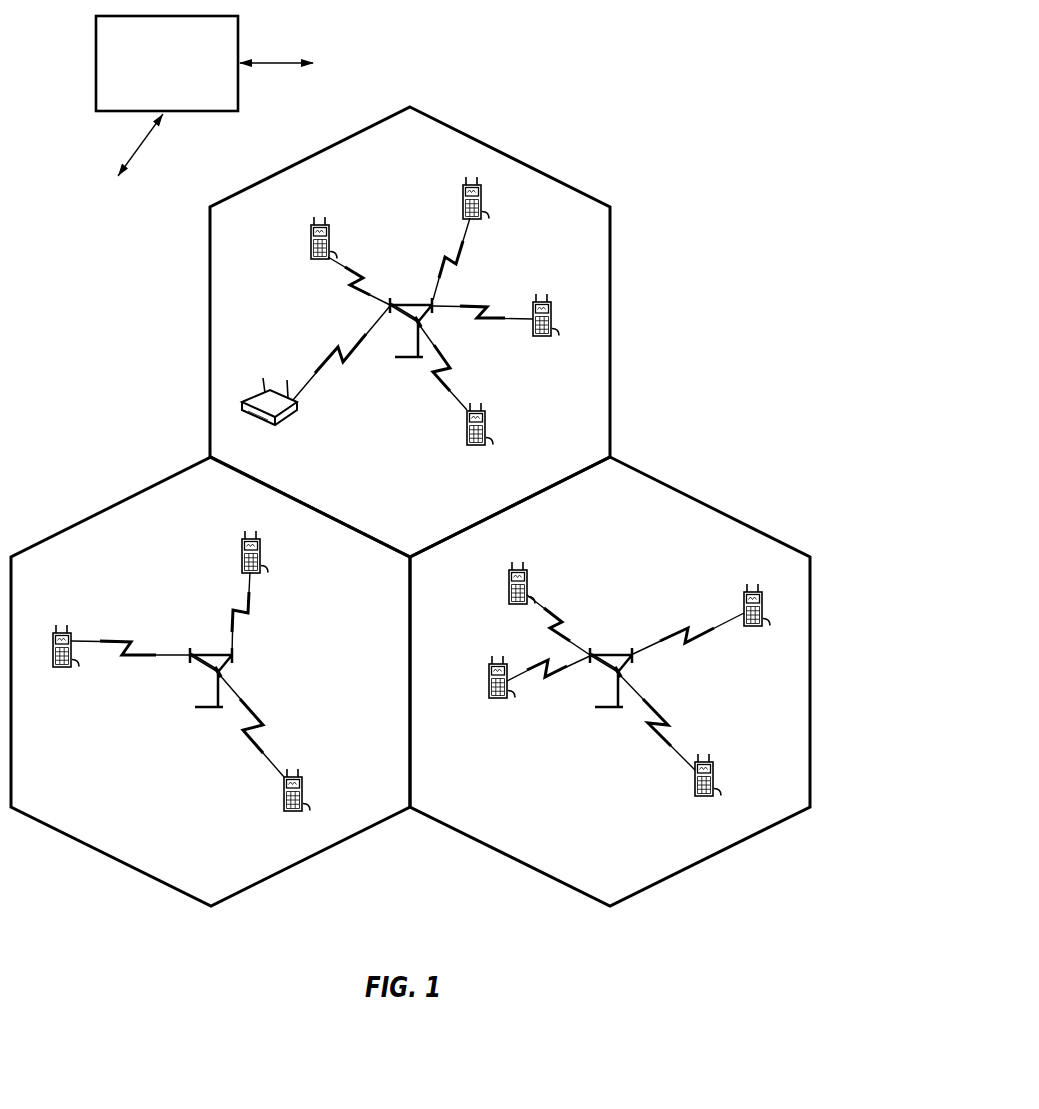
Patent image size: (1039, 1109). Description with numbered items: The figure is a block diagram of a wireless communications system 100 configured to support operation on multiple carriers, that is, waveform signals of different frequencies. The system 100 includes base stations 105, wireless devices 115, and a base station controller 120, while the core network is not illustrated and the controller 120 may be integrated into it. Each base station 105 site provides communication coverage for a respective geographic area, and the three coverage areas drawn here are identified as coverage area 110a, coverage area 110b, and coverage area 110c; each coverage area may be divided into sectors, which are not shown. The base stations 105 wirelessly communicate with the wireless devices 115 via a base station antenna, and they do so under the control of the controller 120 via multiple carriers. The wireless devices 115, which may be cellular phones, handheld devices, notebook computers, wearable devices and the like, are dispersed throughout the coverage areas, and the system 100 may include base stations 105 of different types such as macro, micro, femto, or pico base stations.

The wireless communications system 100 is at (650, 58).
The base station 105 is at (408, 303).
The coverage area 110a is at (108, 508).
The coverage area 110b is at (511, 158).
The coverage area 110c is at (708, 506).
The wireless device 115 is at (311, 234).
The base station controller 120 is at (96, 23).